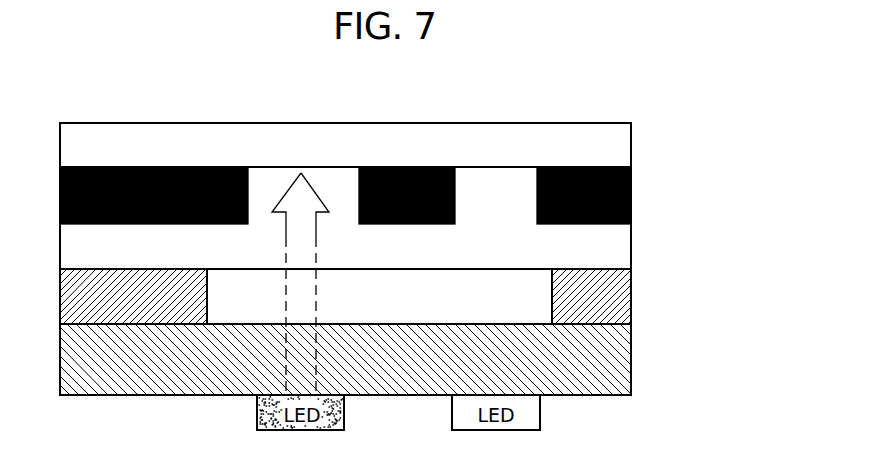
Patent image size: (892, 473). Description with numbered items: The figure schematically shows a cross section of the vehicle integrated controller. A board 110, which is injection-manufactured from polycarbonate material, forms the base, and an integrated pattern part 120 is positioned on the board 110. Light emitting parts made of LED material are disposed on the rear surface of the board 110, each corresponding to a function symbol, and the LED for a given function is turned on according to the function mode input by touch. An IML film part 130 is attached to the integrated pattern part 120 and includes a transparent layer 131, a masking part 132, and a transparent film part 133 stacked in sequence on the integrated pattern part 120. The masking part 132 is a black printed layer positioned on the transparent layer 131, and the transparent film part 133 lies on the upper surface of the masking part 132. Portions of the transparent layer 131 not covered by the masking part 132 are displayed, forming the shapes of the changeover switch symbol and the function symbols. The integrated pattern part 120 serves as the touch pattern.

The board 110 is at (618, 360).
The integrated pattern part 120 is at (618, 296).
The IML film part 130 is at (434, 259).
The transparent layer 131 is at (502, 284).
The masking part 132 is at (632, 195).
The transparent film part 133 is at (618, 145).